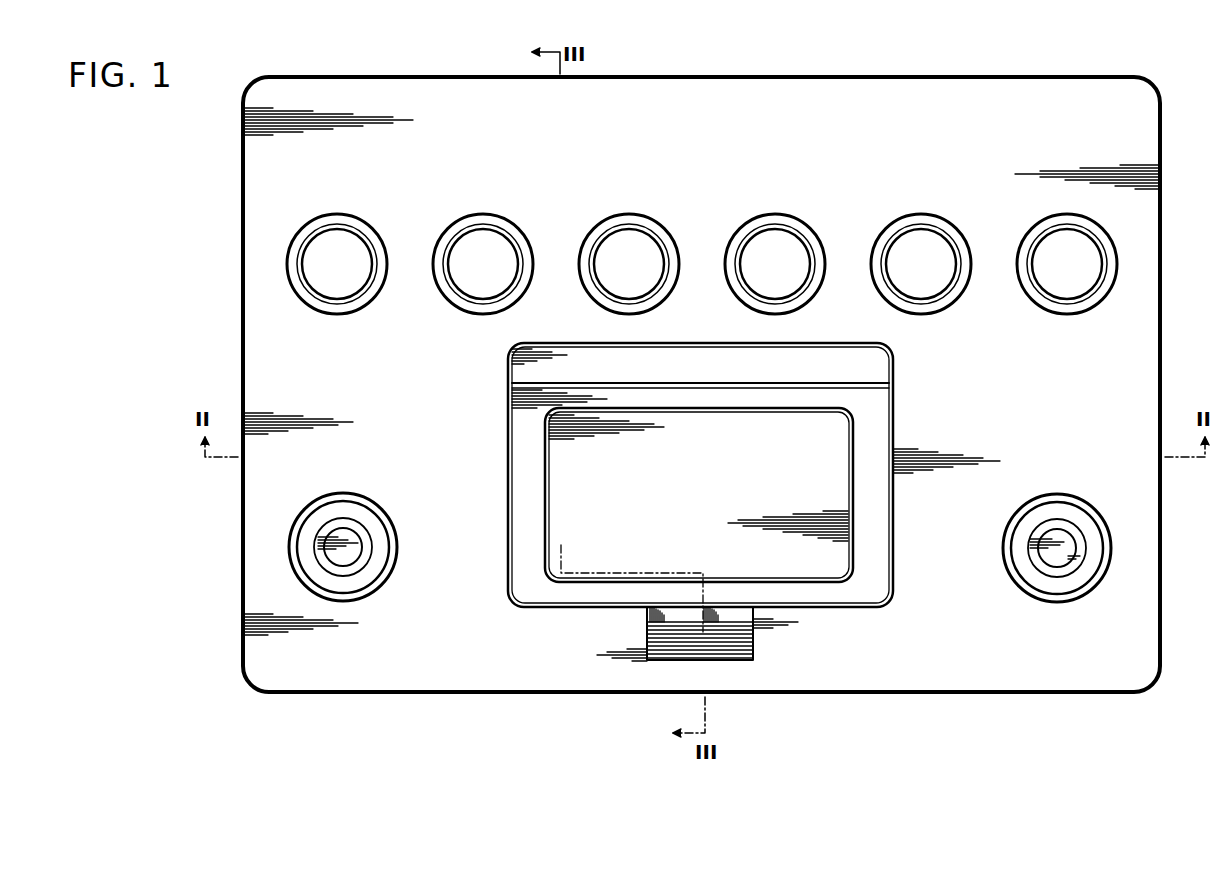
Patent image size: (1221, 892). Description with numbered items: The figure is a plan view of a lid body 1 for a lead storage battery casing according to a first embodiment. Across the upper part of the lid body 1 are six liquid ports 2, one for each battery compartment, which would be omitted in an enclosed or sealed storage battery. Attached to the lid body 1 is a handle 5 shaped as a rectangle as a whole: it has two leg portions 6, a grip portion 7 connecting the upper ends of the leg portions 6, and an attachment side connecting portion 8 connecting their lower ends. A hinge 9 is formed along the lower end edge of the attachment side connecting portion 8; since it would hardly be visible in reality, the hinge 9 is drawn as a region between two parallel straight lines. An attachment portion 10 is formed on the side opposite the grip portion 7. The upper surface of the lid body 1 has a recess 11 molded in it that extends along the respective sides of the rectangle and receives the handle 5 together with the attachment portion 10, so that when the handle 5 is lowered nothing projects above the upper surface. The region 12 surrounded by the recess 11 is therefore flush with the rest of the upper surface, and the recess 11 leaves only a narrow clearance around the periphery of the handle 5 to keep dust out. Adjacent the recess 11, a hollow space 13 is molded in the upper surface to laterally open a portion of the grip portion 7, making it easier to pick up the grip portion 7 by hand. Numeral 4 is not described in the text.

The lid body 1 is at (1082, 72).
The liquid ports 2 is at (302, 268).
The rotary knobs 4 is at (308, 553).
The handle 5 is at (893, 595).
The leg portions 6 is at (527, 500).
The grip portion 7 is at (593, 593).
The attachment side connecting portion 8 is at (835, 398).
The hinge 9 is at (862, 383).
The attachment portion 10 is at (533, 367).
The recess 11 is at (508, 445).
The region 12 is at (788, 560).
The hollow space 13 is at (657, 648).